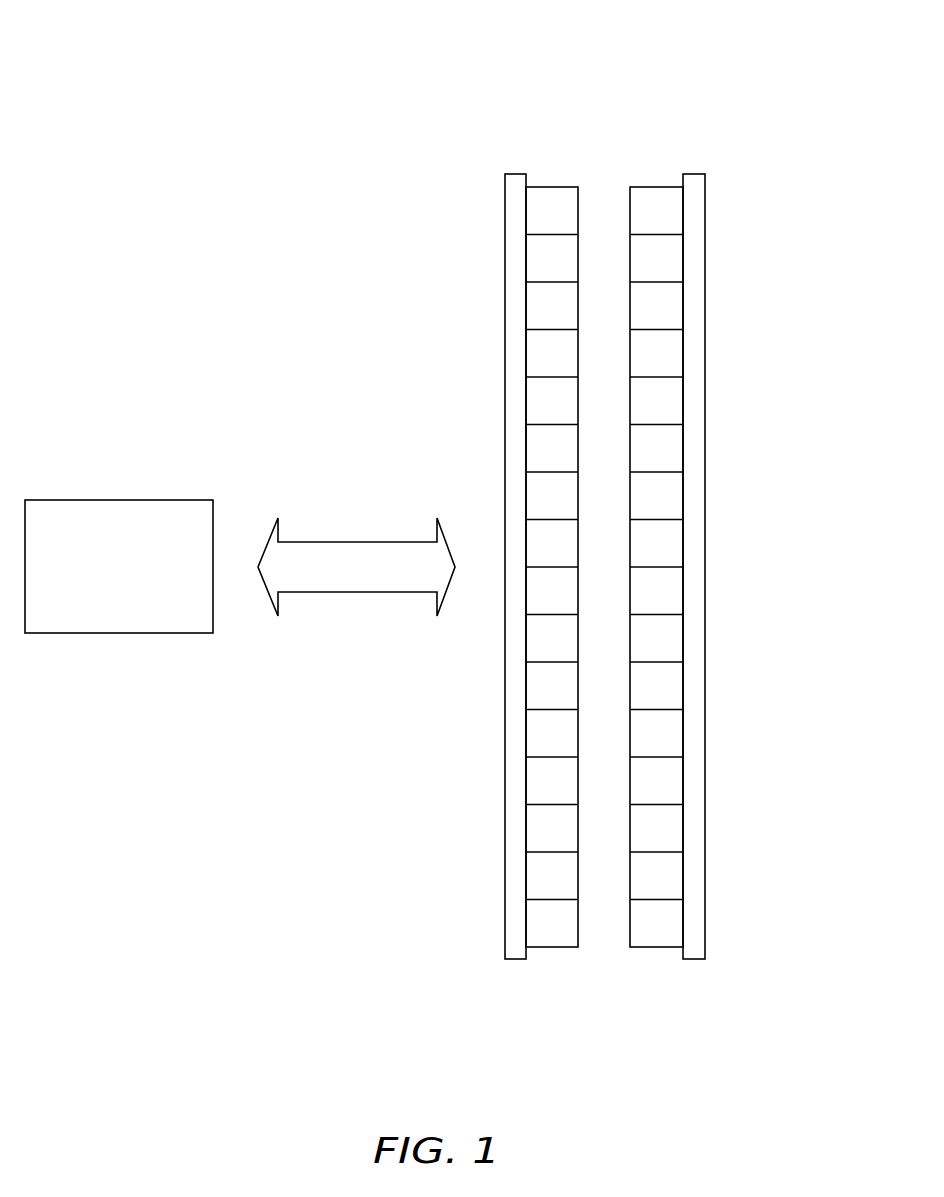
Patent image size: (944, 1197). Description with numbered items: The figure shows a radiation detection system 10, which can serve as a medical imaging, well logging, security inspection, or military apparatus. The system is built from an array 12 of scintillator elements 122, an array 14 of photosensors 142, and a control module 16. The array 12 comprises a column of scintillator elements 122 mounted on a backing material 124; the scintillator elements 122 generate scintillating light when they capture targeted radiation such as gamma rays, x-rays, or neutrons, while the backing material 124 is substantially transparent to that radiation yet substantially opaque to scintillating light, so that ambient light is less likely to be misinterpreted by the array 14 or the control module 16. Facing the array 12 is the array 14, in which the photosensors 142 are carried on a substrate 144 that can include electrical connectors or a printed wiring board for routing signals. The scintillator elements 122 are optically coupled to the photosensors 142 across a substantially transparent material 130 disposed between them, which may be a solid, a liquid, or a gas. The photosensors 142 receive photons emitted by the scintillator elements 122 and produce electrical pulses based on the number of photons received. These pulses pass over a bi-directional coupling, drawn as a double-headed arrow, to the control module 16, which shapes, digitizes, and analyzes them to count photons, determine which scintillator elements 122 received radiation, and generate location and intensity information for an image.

The radiation detection system 10 is at (798, 58).
The array of scintillator elements 12 is at (800, 647).
The array of photosensors 14 is at (492, 473).
The control module 16 is at (133, 579).
The scintillator elements 122 is at (667, 405).
The backing material 124 is at (692, 715).
The substantially transparent material 130 is at (617, 547).
The photosensors 142 is at (542, 362).
The substrate 144 is at (517, 803).